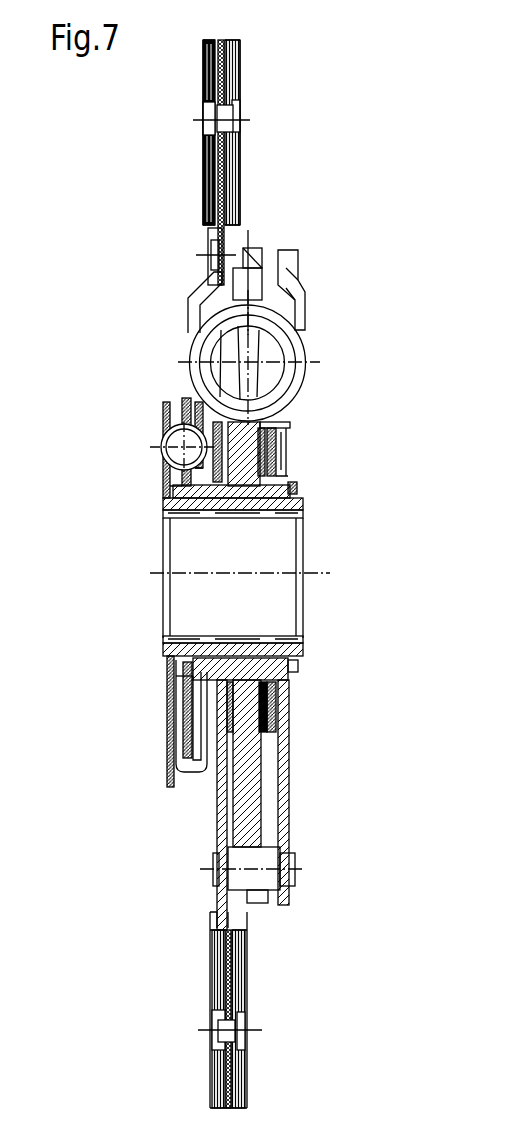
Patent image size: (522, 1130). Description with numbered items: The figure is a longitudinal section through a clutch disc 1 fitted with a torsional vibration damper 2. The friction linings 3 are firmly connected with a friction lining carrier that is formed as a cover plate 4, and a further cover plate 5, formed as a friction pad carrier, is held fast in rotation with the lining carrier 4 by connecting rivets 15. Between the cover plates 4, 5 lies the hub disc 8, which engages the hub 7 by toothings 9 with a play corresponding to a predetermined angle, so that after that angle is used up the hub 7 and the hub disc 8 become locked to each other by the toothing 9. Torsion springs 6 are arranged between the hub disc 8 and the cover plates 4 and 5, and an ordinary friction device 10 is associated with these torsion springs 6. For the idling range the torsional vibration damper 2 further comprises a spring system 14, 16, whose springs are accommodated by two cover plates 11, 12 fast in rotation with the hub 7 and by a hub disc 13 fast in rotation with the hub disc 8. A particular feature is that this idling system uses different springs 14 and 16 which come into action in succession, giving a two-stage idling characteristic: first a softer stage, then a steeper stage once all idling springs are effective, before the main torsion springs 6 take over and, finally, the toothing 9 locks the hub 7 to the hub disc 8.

The clutch disc 1 is at (322, 208).
The torsional vibration damper 2 is at (143, 360).
The friction linings 3 is at (217, 182).
The cover plate 4 is at (217, 836).
The cover plate 5 is at (289, 820).
The torsion springs 6 is at (300, 343).
The hub 7 is at (303, 502).
The hub disc 8 is at (246, 757).
The toothings 9 is at (303, 660).
The friction device 10 is at (298, 459).
The cover plate 11 is at (167, 676).
The cover plate 12 is at (186, 775).
The hub disc 13 is at (183, 718).
The spring 14 is at (160, 447).
The connecting rivets 15 is at (270, 880).
The spring 16 is at (186, 477).